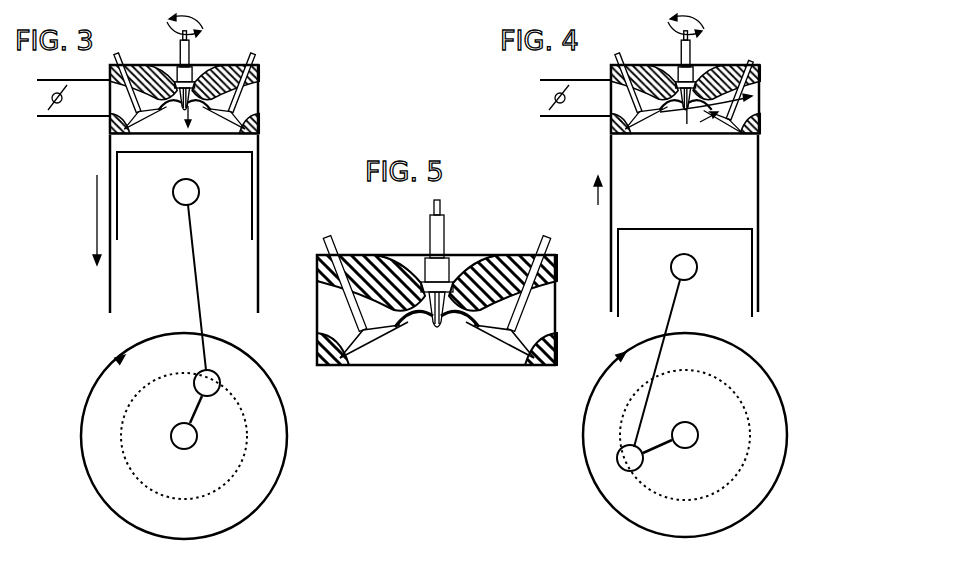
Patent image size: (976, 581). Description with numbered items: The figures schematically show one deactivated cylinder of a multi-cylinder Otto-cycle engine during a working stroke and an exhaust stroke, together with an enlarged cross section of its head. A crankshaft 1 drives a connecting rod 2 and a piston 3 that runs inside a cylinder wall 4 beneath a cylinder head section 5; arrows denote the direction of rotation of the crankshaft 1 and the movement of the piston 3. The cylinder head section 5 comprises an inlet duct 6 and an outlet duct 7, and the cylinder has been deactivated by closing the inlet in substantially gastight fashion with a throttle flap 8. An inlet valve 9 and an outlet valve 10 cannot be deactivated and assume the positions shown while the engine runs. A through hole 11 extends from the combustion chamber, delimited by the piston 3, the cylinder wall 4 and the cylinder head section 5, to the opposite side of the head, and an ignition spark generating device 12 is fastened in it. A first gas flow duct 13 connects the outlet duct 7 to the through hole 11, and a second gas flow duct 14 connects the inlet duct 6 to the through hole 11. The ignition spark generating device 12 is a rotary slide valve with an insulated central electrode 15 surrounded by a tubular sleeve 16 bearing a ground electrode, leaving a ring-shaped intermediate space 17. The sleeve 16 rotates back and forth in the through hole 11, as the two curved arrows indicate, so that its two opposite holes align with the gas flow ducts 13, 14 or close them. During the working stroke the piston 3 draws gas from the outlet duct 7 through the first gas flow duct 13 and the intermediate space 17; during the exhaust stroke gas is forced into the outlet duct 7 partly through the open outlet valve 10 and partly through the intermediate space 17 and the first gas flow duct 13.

In FIG. 3, the crankshaft 1 is at (265, 480).
In FIG. 4, the crankshaft 1 is at (628, 494).
In FIG. 3, the connecting rod 2 is at (200, 410).
In FIG. 4, the connecting rod 2 is at (632, 422).
In FIG. 3, the piston 3 is at (118, 222).
In FIG. 4, the piston 3 is at (690, 228).
In FIG. 3, the cylinder wall 4 is at (112, 280).
In FIG. 4, the cylinder wall 4 is at (611, 150).
In FIG. 3, the cylinder head section 5 is at (258, 68).
In FIG. 4, the cylinder head section 5 is at (758, 70).
In FIG. 5, the cylinder head section 5 is at (340, 366).
In FIG. 3, the inlet duct 6 is at (117, 107).
In FIG. 4, the inlet duct 6 is at (617, 105).
In FIG. 5, the inlet duct 6 is at (325, 294).
In FIG. 3, the outlet duct 7 is at (262, 90).
In FIG. 4, the outlet duct 7 is at (760, 108).
In FIG. 5, the outlet duct 7 is at (548, 300).
In FIG. 3, the throttle flap 8 is at (50, 113).
In FIG. 4, the throttle flap 8 is at (550, 100).
In FIG. 5, the inlet valve 9 is at (370, 338).
In FIG. 5, the outlet valve 10 is at (495, 338).
In FIG. 5, the through hole 11 is at (415, 283).
In FIG. 3, the ignition spark generating device 12 is at (192, 76).
In FIG. 4, the ignition spark generating device 12 is at (693, 75).
In FIG. 5, the ignition spark generating device 12 is at (441, 236).
In FIG. 5, the first gas flow duct 13 is at (488, 303).
In FIG. 5, the second gas flow duct 14 is at (385, 300).
In FIG. 5, the central electrode 15 is at (440, 332).
In FIG. 5, the sleeve 16 is at (458, 290).
In FIG. 5, the intermediate space 17 is at (448, 332).